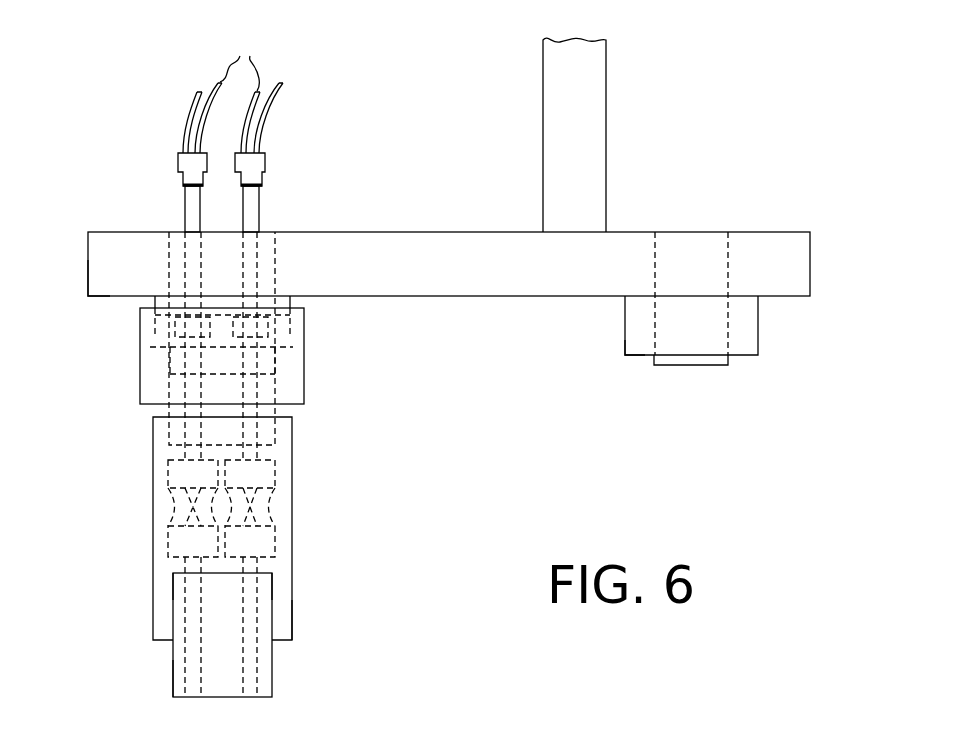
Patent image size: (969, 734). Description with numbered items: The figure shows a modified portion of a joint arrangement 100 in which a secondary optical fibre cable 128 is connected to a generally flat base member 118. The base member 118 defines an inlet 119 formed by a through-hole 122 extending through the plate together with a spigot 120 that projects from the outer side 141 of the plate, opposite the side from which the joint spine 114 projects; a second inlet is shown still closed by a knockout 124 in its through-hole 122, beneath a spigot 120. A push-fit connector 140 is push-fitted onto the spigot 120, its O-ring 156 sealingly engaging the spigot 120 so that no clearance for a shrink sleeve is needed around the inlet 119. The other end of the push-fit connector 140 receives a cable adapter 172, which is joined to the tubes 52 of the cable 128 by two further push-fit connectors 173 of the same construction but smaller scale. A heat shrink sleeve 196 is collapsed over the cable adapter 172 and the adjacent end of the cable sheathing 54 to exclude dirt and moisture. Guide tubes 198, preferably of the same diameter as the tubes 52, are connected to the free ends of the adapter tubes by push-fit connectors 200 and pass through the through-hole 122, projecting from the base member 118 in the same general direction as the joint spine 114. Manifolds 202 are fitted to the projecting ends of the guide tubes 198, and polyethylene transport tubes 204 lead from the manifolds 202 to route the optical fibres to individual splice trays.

The joint arrangement 100 is at (131, 58).
The joint spine 114 is at (606, 78).
The base member 118 is at (810, 246).
The inlet 119 is at (626, 366).
The spigot 120 is at (758, 337).
The through-hole 122 is at (656, 240).
The knockout 124 is at (690, 366).
The secondary optical fibre cable 128 is at (158, 678).
The push-fit connector 140 is at (318, 384).
The side of the base member 141 is at (88, 297).
The O-ring 156 is at (290, 262).
The cable adapter 172 is at (180, 430).
The further push-fit connectors 173 is at (160, 543).
The heat shrink sleeve 196 is at (292, 628).
The guide tubes 198 is at (185, 210).
The push-fit connectors 200 is at (155, 347).
The manifolds 202 is at (178, 163).
The transport tubes 204 is at (233, 92).
The tubes 52 is at (168, 590).
The sheathing 54 is at (272, 683).